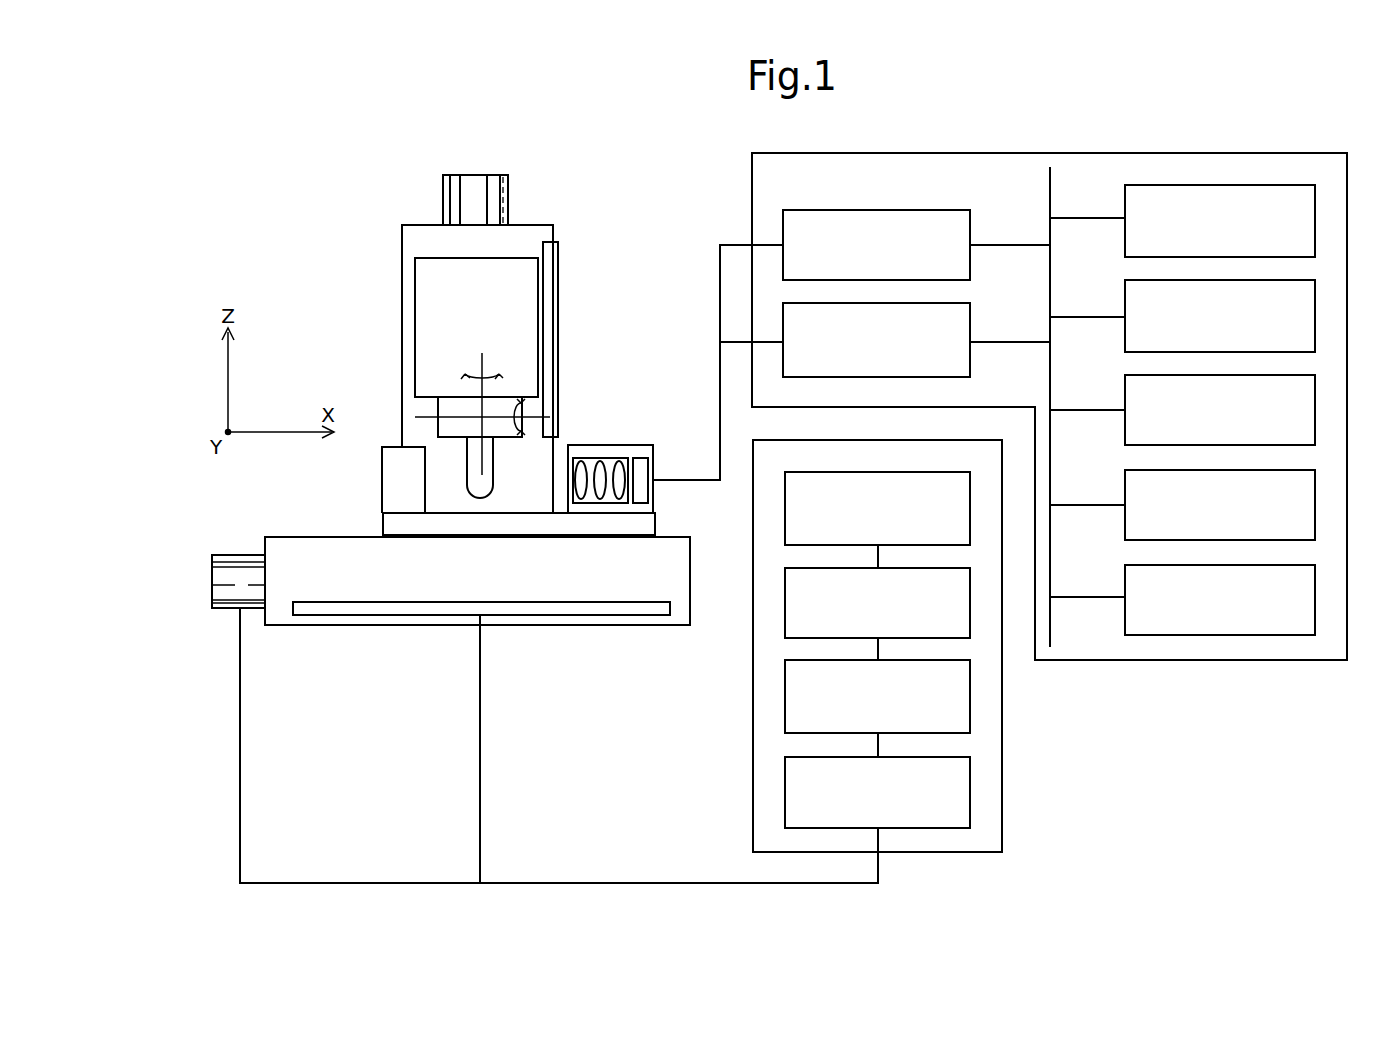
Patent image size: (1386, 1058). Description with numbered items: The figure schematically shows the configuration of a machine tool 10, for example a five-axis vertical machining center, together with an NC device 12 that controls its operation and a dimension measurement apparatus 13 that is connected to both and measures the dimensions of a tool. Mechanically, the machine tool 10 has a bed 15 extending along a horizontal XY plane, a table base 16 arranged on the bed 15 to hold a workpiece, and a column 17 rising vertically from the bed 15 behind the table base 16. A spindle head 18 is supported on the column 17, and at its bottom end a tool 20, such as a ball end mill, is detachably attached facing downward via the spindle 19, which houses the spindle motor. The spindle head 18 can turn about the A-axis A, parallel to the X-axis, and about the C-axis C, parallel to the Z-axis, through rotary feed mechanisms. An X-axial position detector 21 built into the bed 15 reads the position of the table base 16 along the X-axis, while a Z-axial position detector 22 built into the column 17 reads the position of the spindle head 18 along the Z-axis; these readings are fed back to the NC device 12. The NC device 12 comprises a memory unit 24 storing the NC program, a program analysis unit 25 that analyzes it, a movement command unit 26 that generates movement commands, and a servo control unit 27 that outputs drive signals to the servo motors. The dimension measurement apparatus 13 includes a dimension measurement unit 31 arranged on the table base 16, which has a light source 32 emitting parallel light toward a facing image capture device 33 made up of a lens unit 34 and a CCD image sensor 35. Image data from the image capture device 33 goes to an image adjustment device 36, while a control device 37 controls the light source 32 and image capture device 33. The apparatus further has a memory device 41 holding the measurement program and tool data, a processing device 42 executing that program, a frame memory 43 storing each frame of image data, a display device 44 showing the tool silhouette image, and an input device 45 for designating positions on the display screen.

The machine tool 10 is at (334, 176).
The NC device 12 is at (750, 738).
The dimension measurement apparatus 13 is at (1240, 139).
The bed 15 is at (690, 580).
The table base 16 is at (383, 522).
The column 17 is at (402, 250).
The spindle head 18 is at (415, 320).
The spindle 19 is at (438, 408).
The tool 20 is at (467, 455).
The X-axial position detector 21 is at (343, 615).
The Z-axial position detector 22 is at (560, 265).
The memory unit 24 is at (785, 525).
The program analysis unit 25 is at (785, 612).
The movement command unit 26 is at (785, 697).
The servo control unit 27 is at (785, 785).
The dimension measurement unit 31 is at (615, 443).
The light source 32 is at (382, 488).
The image capture device 33 is at (640, 445).
The lens unit 34 is at (585, 458).
The CCD image sensor 35 is at (656, 470).
The image adjustment device 36 is at (970, 320).
The control device 37 is at (970, 225).
The memory device 41 is at (1125, 300).
The processing device 42 is at (1125, 395).
The frame memory 43 is at (1125, 205).
The display device 44 is at (1125, 495).
The input device 45 is at (1125, 585).
The A-axis A is at (538, 412).
The C-axis C is at (480, 362).